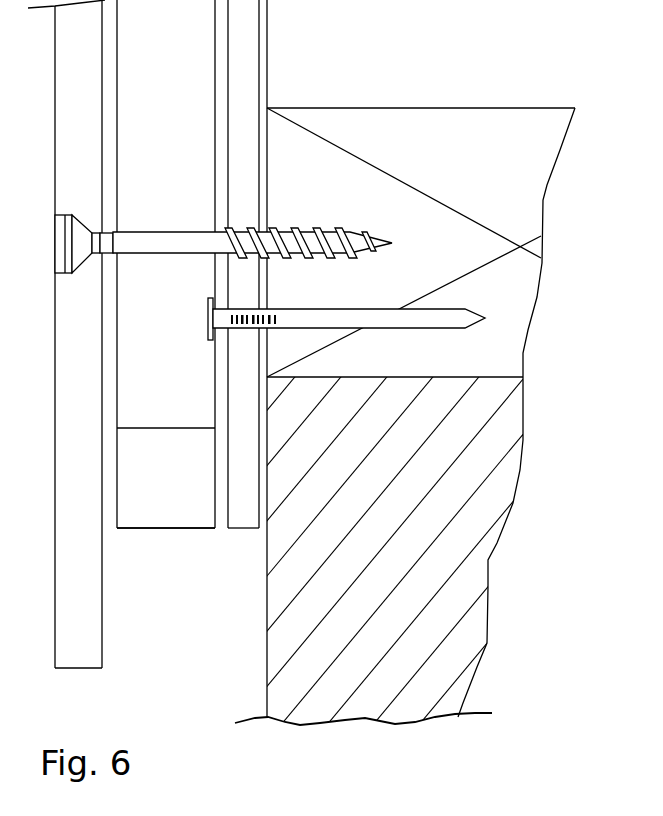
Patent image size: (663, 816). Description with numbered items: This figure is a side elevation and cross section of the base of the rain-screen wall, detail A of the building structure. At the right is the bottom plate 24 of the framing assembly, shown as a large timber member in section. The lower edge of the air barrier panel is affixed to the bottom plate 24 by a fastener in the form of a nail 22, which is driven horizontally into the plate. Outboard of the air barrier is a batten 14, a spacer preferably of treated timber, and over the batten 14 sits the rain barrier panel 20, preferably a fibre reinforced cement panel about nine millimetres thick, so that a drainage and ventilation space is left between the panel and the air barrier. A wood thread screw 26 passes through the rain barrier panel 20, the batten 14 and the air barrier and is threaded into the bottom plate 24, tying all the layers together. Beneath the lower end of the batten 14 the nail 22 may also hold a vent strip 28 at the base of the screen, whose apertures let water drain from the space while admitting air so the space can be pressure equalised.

The batten 14 is at (185, 115).
The rain barrier panel 20 is at (95, 156).
The nail 22 is at (323, 313).
The bottom plate 24 is at (482, 166).
The wood thread screw 26 is at (188, 242).
The vent strip 28 is at (176, 542).